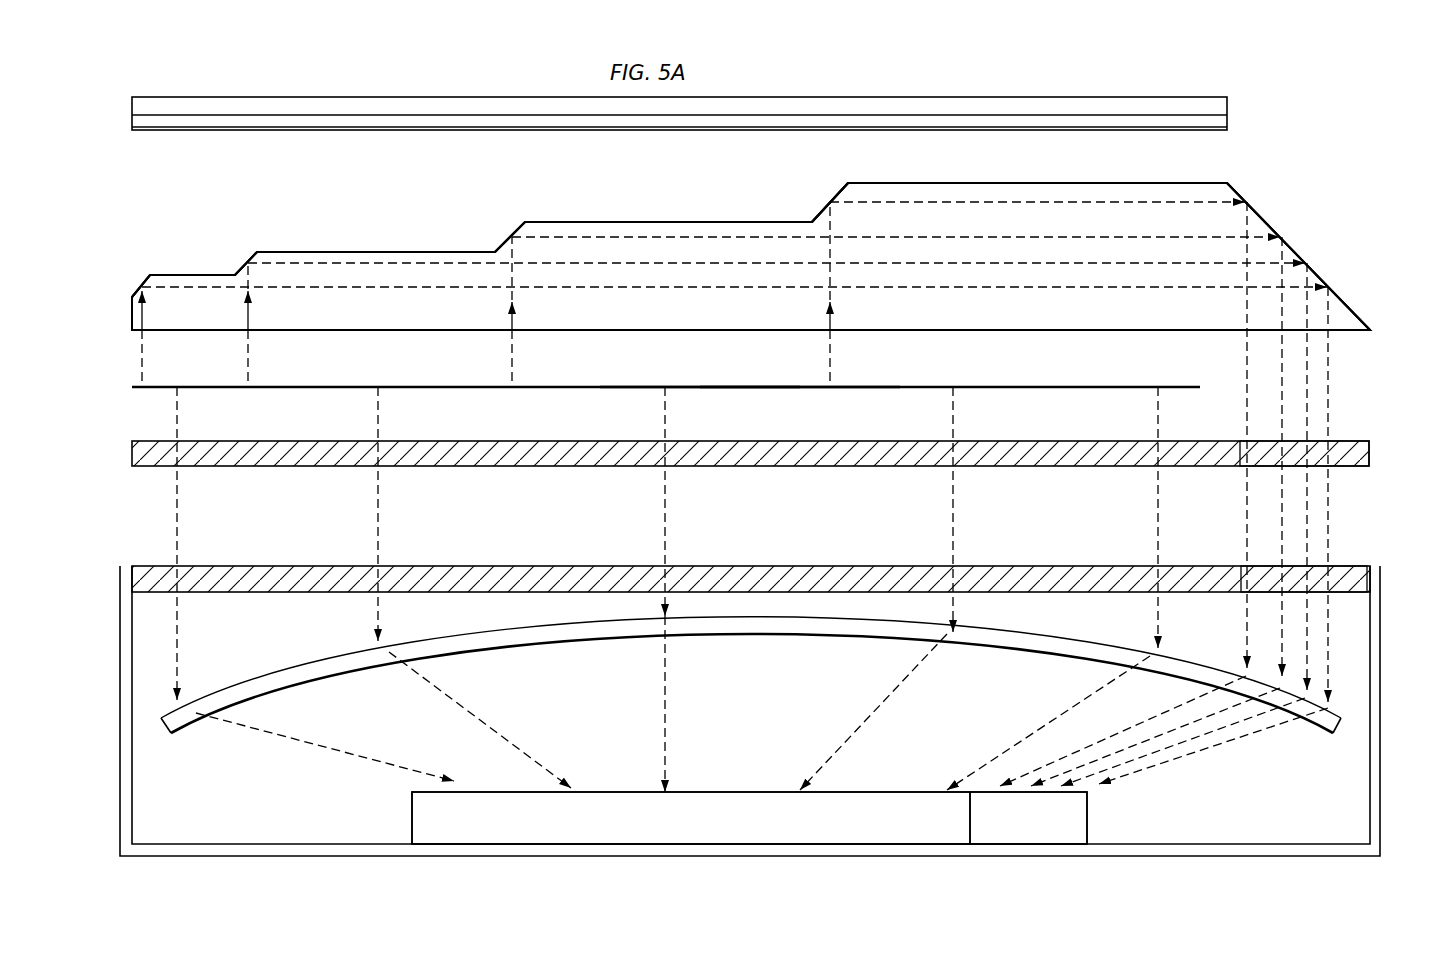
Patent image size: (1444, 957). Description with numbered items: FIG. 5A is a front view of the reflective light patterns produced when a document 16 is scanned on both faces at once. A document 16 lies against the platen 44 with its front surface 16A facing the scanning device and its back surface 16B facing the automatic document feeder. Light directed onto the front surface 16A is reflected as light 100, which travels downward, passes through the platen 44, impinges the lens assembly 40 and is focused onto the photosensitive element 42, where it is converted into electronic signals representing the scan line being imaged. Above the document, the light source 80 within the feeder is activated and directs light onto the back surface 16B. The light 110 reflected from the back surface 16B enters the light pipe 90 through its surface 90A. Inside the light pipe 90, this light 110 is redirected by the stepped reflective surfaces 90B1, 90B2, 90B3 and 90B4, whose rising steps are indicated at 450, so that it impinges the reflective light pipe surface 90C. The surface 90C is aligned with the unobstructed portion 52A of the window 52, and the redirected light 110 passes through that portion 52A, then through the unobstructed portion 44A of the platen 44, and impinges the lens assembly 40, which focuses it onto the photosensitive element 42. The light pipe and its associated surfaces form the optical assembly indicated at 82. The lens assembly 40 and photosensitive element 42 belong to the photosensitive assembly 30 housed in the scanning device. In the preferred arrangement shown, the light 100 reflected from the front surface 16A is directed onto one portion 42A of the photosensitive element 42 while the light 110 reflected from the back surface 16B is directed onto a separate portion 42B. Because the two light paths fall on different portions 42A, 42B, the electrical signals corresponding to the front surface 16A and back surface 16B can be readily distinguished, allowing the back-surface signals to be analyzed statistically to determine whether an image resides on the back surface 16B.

The light source 80 is at (872, 97).
The light pipe 90 is at (1264, 222).
The prism assembly 82 is at (1320, 240).
The light pipe surface 90A is at (992, 328).
The reflective light pipe surface 90C is at (1340, 320).
The reflective surface 90B1 is at (150, 275).
The reflective surface 90B2 is at (255, 253).
The reflective surface 90B3 is at (524, 222).
The reflective surface 90B4 is at (846, 185).
The step edge 450 is at (855, 174).
The reflected light 110 is at (1362, 352).
The document 16 is at (158, 390).
The back surface 16B is at (695, 387).
The front surface 16A is at (796, 389).
The window 52 is at (487, 467).
The unobstructed portion of window 52A is at (1368, 420).
The reflected light 100 is at (177, 518).
The photosensitive assembly 30 is at (1353, 710).
The platen 44 is at (240, 594).
The unobstructed portion of platen 44A is at (1367, 546).
The lens assembly 40 is at (602, 640).
The photosensitive element 42 is at (411, 818).
The portion of photosensitive element 42A is at (725, 802).
The portion of photosensitive element 42B is at (1077, 822).